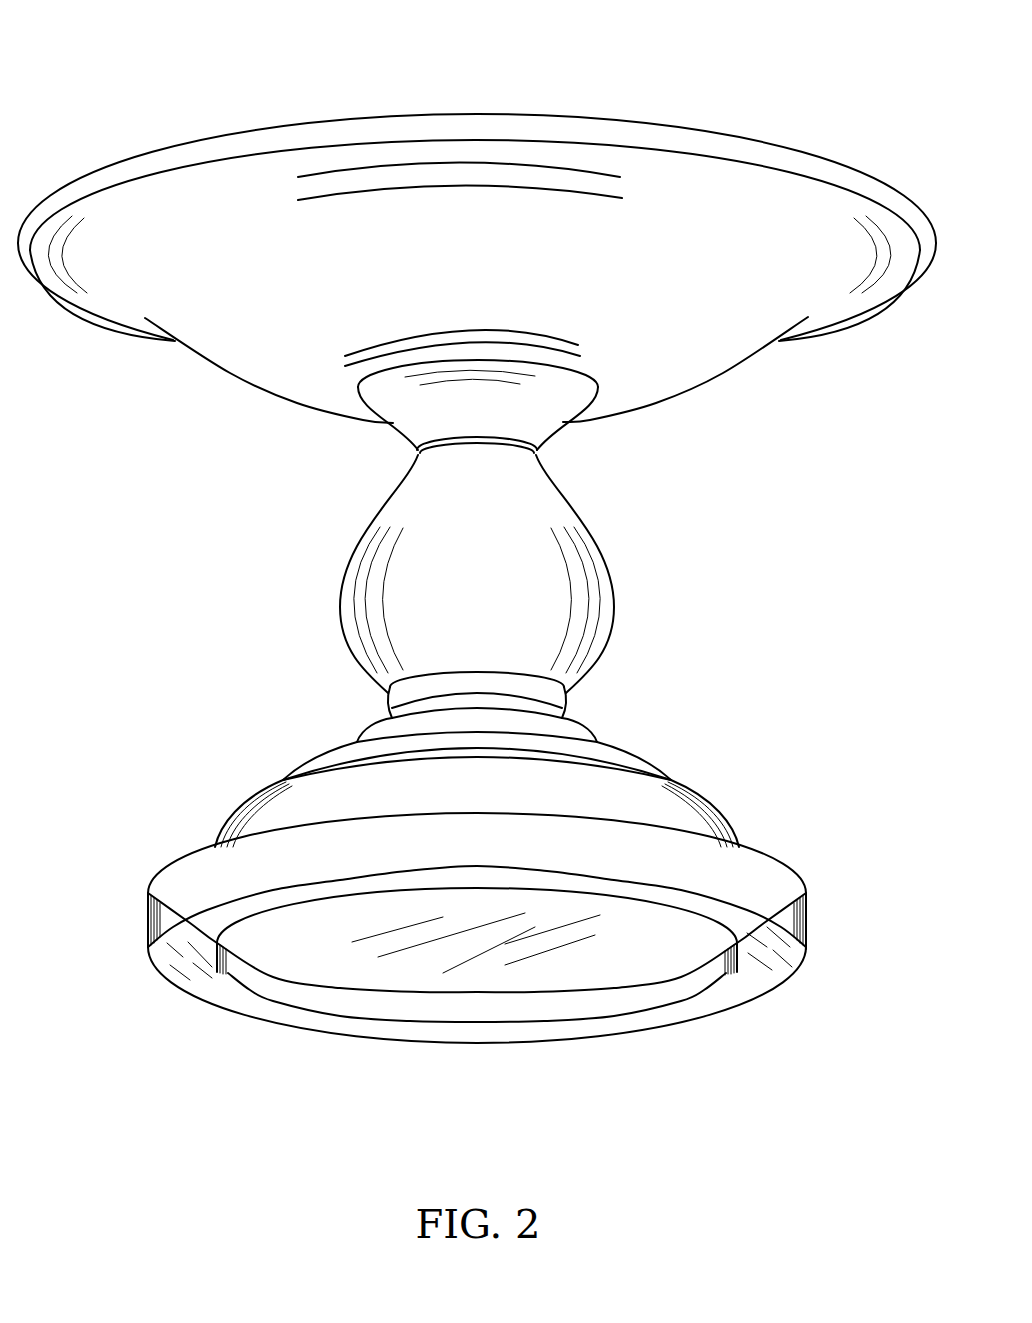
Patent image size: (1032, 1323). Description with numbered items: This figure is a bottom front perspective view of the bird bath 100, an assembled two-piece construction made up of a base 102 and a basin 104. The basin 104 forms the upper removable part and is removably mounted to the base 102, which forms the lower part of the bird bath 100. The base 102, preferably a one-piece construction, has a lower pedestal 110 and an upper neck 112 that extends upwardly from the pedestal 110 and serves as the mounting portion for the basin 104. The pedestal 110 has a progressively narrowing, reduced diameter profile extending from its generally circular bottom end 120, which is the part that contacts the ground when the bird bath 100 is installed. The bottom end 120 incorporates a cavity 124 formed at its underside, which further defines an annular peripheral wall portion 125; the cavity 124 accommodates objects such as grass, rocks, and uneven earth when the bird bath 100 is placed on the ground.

The bird bath 100 is at (230, 97).
The basin 104 is at (205, 428).
The base 102 is at (212, 703).
The neck 112 is at (617, 593).
The pedestal 110 is at (727, 807).
The bottom end 120 is at (750, 872).
The annular peripheral wall portion 125 is at (742, 980).
The cavity 124 is at (364, 962).